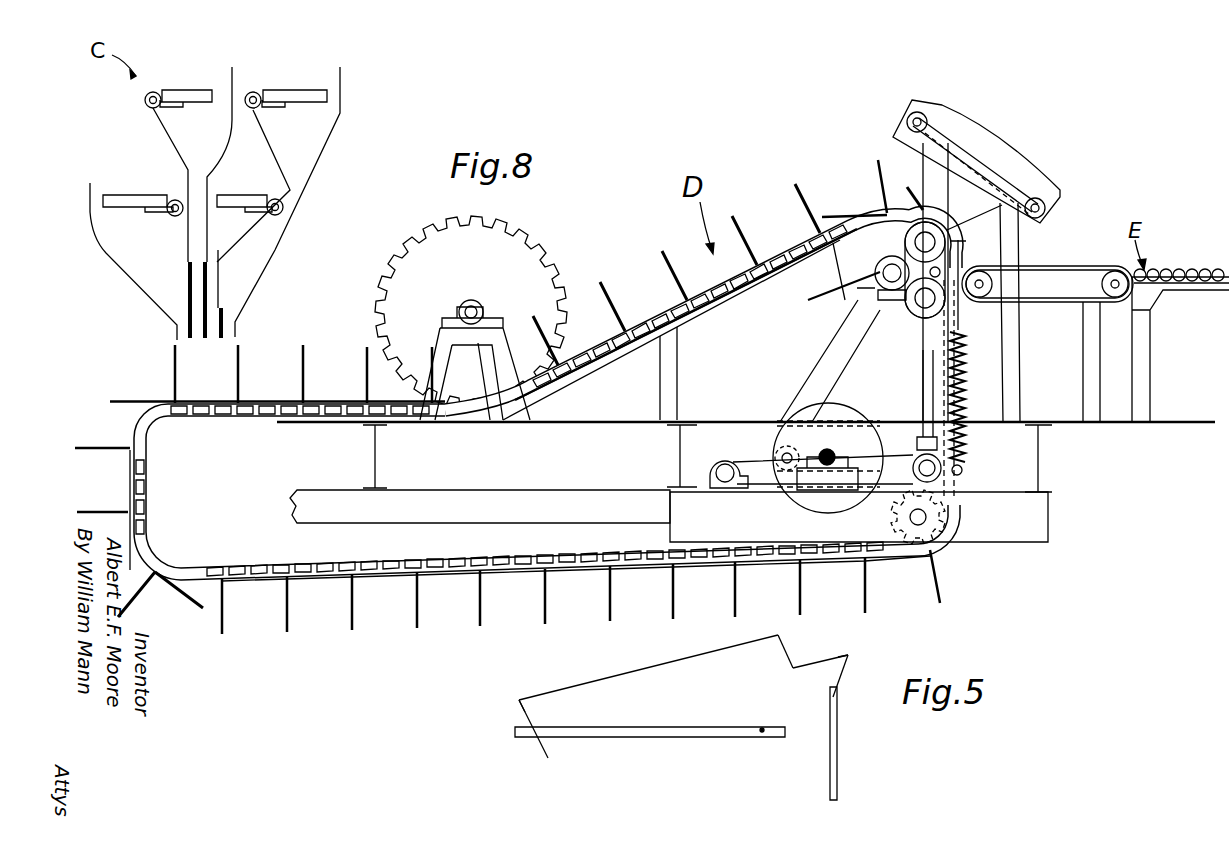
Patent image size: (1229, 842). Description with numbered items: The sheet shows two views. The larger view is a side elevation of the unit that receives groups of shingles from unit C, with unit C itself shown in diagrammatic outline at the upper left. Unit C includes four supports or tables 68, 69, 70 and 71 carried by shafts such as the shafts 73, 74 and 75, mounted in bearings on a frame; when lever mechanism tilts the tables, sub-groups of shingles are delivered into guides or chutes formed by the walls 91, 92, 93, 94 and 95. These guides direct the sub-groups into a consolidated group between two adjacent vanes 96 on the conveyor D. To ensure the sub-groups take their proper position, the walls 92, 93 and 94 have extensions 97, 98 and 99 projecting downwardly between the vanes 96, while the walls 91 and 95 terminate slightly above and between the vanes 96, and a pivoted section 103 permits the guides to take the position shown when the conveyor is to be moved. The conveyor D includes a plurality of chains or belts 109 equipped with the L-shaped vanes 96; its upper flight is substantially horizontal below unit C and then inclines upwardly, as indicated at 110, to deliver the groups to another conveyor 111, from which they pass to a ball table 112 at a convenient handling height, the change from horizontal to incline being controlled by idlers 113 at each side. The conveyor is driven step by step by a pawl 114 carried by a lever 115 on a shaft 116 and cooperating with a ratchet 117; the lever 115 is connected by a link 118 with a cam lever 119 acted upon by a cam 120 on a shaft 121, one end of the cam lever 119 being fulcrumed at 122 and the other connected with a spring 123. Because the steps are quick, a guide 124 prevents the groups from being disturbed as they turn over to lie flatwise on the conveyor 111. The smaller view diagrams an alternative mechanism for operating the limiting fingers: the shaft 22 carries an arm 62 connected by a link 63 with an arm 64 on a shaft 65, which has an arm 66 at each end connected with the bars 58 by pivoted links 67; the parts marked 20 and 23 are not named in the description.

In FIG. 8, the support or table 68 is at (182, 92).
In FIG. 8, the support or table 69 is at (298, 93).
In FIG. 8, the support or table 70 is at (120, 198).
In FIG. 8, the support or table 71 is at (232, 198).
In FIG. 8, the shaft 73 is at (145, 104).
In FIG. 8, the shaft 74 is at (172, 214).
In FIG. 8, the shaft 75 is at (274, 200).
In FIG. 8, the wall 91 is at (110, 262).
In FIG. 8, the wall 92 is at (188, 237).
In FIG. 8, the wall 93 is at (207, 223).
In FIG. 8, the wall 94 is at (283, 233).
In FIG. 8, the wall 95 is at (292, 220).
In FIG. 8, the L-shaped vane 96 is at (302, 352).
In FIG. 8, the extension 97 is at (190, 341).
In FIG. 8, the extension 98 is at (205, 342).
In FIG. 8, the extension 99 is at (221, 340).
In FIG. 8, the pivoted section 103 is at (229, 258).
In FIG. 8, the chain or belt 109 is at (255, 411).
In FIG. 8, the incline 110 is at (710, 312).
In FIG. 8, the conveyor 111 is at (1057, 265).
In FIG. 8, the ball table 112 is at (1182, 270).
In FIG. 8, the idler 113 is at (517, 243).
In FIG. 8, the pawl 114 is at (950, 244).
In FIG. 8, the lever 115 is at (905, 244).
In FIG. 8, the shaft 116 is at (892, 278).
In FIG. 8, the ratchet 117 is at (826, 288).
In FIG. 8, the link 118 is at (922, 371).
In FIG. 8, the cam lever 119 is at (893, 477).
In FIG. 8, the cam 120 is at (778, 437).
In FIG. 8, the shaft 121 is at (832, 452).
In FIG. 8, the fulcrum 122 is at (725, 468).
In FIG. 8, the spring 123 is at (965, 396).
In FIG. 8, the guide 124 is at (965, 160).
In FIG. 5, the bar 20 is at (633, 727).
In FIG. 5, the shaft 22 is at (548, 758).
In FIG. 5, the pin 23 is at (762, 730).
In FIG. 5, the bar 58 is at (838, 723).
In FIG. 5, the arm 62 is at (515, 713).
In FIG. 5, the link 63 is at (680, 662).
In FIG. 5, the arm 64 is at (785, 653).
In FIG. 5, the shaft 65 is at (794, 669).
In FIG. 5, the arm 66 is at (830, 657).
In FIG. 5, the pivoted link 67 is at (848, 668).